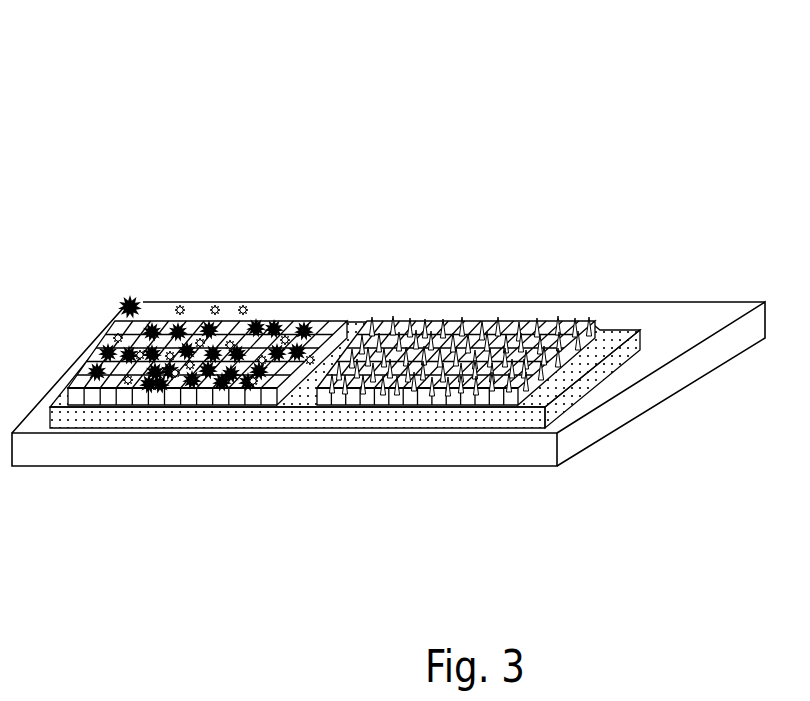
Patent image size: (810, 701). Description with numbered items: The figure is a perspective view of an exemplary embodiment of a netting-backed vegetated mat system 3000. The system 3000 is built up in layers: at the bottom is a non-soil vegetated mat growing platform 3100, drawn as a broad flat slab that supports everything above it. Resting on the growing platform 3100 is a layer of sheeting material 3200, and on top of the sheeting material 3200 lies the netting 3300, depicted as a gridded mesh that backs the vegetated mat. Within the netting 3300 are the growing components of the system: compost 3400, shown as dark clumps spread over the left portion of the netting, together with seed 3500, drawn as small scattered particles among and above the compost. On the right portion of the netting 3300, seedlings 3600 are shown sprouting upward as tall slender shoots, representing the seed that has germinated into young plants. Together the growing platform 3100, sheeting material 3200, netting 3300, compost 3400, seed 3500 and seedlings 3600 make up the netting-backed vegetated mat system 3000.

The netting-backed vegetated mat system 3000 is at (138, 138).
The non-soil vegetated mat growing platform 3100 is at (85, 462).
The sheeting material 3200 is at (222, 417).
The netting 3300 is at (368, 392).
The compost 3400 is at (128, 295).
The seed 3500 is at (245, 303).
The seedlings 3600 is at (420, 302).